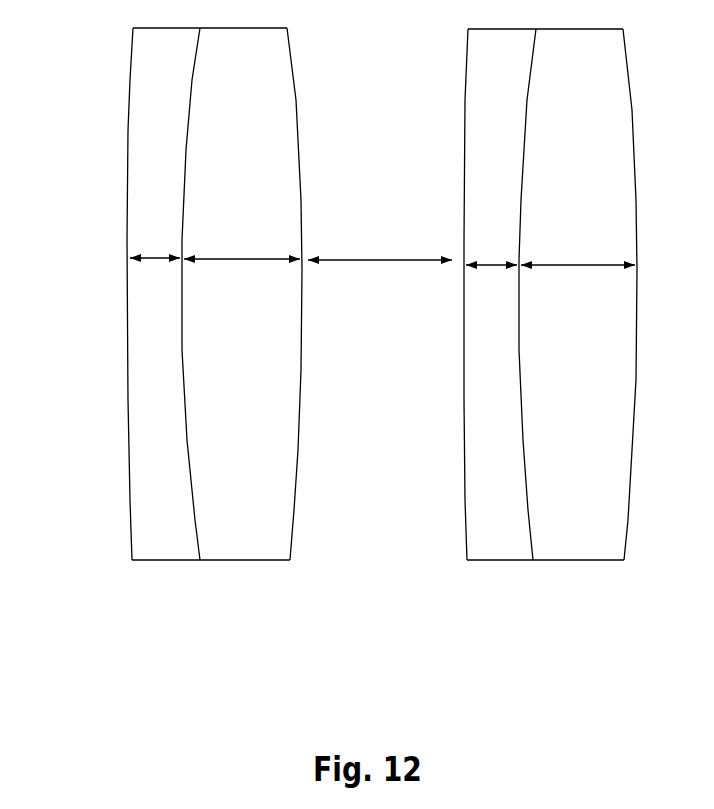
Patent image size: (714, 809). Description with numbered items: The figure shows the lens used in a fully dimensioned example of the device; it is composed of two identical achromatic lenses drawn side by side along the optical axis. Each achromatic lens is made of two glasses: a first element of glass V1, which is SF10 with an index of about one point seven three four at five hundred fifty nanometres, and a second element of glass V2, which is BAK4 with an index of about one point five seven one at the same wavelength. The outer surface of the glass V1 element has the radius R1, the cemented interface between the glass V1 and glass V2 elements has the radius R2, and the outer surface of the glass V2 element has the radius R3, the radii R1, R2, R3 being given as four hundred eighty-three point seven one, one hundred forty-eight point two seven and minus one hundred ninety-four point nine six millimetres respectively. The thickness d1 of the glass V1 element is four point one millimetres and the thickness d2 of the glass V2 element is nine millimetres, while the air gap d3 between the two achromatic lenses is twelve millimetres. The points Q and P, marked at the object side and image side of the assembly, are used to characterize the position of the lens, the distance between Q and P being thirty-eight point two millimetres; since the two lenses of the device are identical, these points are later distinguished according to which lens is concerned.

The first surface radius R1 is at (247, 320).
The second surface radius R2 is at (314, 328).
The third surface radius R3 is at (420, 350).
The glass V1 is at (334, 294).
The glass V2 is at (412, 294).
The first thickness d1 is at (323, 240).
The second thickness d2 is at (409, 240).
The air gap d3 is at (380, 240).
The point Q is at (81, 235).
The point P is at (667, 265).